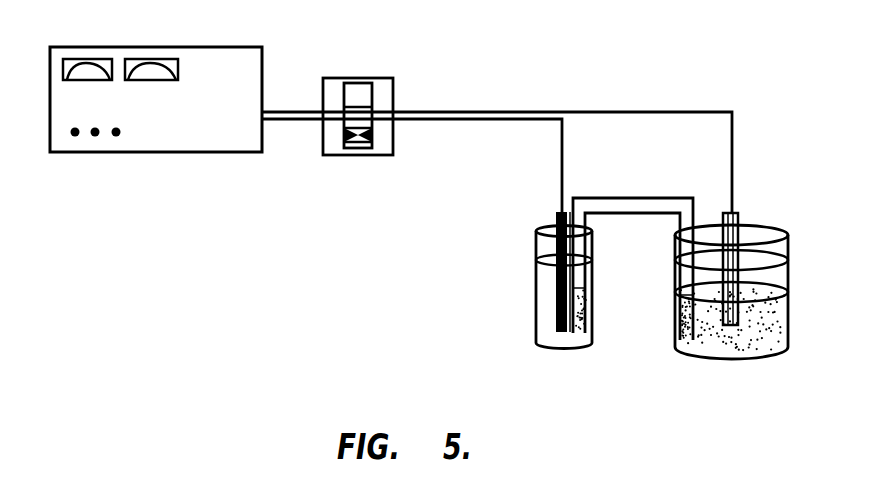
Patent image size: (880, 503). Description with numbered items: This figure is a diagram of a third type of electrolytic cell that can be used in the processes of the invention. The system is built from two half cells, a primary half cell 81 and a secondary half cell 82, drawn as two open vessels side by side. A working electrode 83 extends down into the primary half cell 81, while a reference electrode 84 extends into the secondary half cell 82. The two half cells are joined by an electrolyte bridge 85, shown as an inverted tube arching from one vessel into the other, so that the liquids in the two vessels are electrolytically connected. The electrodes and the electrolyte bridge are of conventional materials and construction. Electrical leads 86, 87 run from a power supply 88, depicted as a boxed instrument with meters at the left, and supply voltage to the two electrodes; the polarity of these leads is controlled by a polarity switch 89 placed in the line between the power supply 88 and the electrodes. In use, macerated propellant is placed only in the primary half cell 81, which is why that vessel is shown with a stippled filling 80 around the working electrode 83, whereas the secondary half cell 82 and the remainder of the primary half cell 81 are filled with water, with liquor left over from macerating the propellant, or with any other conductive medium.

The electrolyte solution 80 is at (770, 318).
The primary half cell 81 is at (763, 355).
The secondary half cell 82 is at (565, 348).
The working electrode 83 is at (740, 230).
The reference electrode 84 is at (554, 222).
The electrolyte bridge 85 is at (620, 198).
The electrical lead 86 is at (452, 120).
The electrical lead 87 is at (452, 111).
The power supply 88 is at (207, 47).
The polarity switch 89 is at (360, 78).